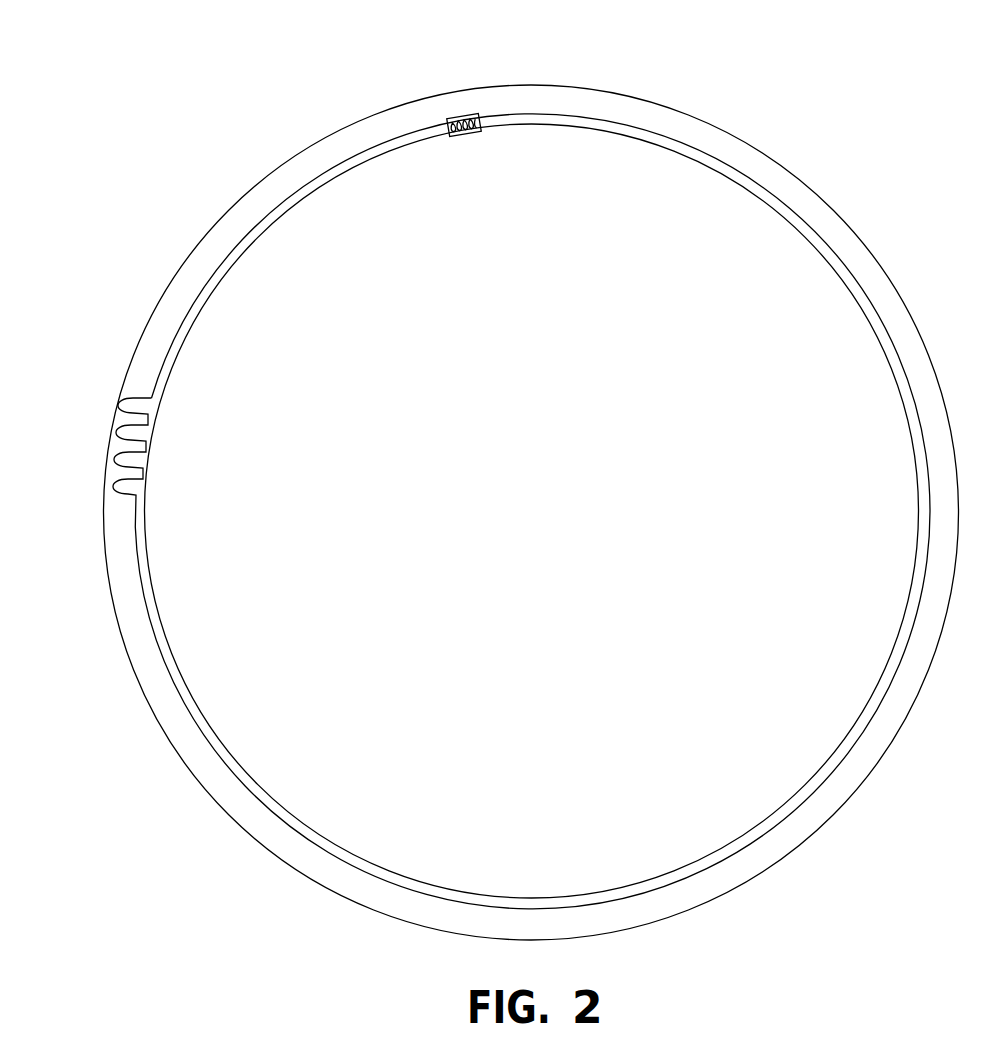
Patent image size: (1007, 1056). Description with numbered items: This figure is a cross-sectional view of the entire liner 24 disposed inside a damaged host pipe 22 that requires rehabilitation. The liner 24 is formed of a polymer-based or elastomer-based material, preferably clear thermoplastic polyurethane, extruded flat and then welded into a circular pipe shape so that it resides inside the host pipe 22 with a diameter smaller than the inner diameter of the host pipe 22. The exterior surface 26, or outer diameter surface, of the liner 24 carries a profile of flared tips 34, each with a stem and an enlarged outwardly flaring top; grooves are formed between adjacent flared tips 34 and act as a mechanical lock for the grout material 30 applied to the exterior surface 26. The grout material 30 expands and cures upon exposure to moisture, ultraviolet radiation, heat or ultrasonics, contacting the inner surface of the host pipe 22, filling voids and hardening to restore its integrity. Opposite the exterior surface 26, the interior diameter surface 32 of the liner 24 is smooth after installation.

The host pipe 22 is at (262, 178).
The liner 24 is at (586, 119).
The exterior surface 26 is at (333, 169).
The grout material 30 is at (202, 272).
The interior diameter surface 32 is at (330, 183).
The flared tips 34 is at (124, 405).